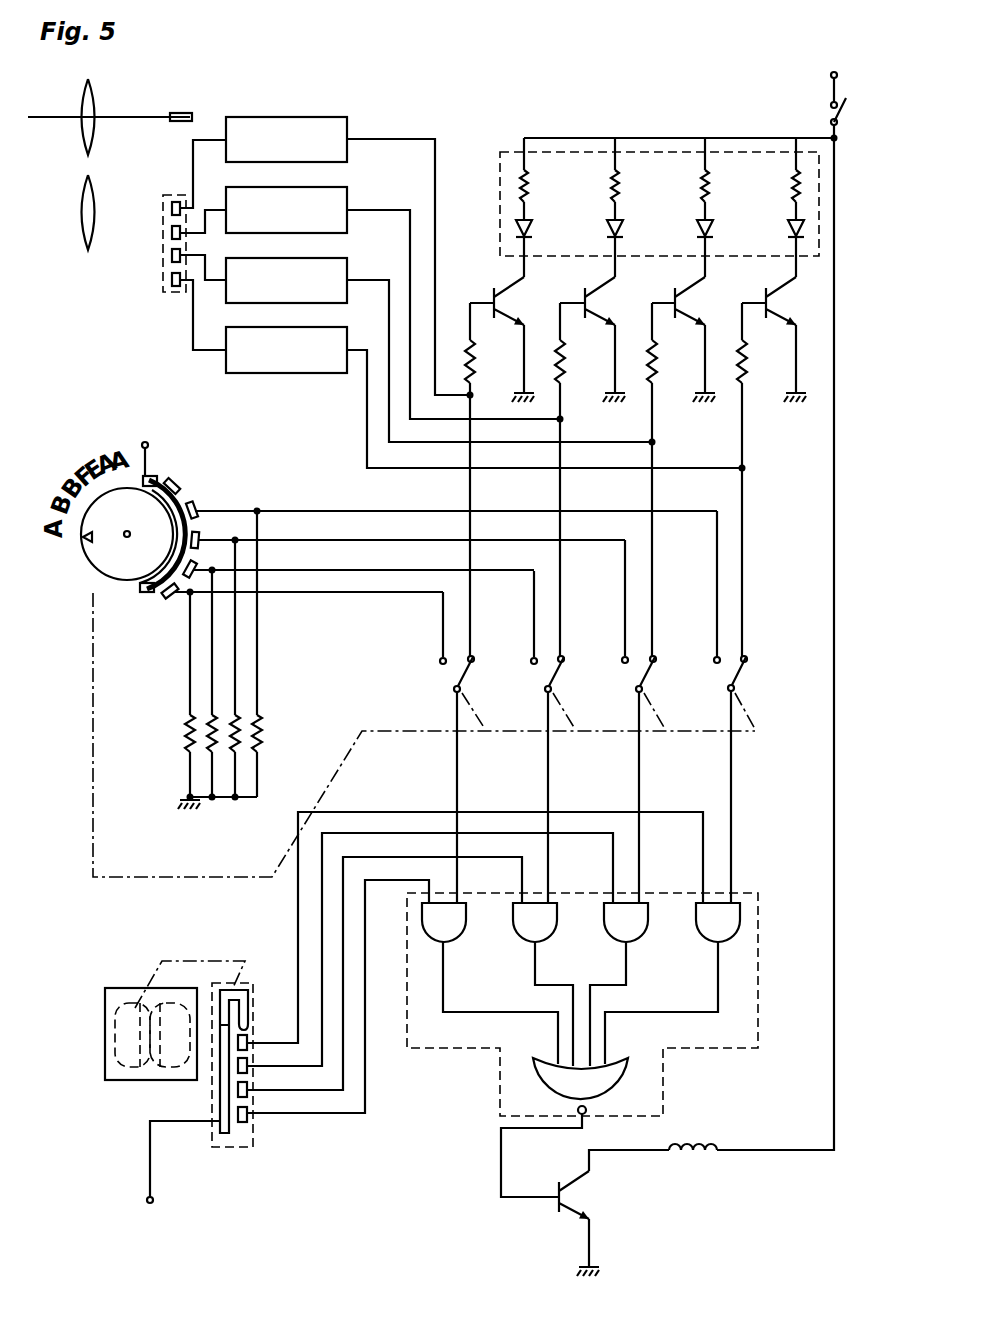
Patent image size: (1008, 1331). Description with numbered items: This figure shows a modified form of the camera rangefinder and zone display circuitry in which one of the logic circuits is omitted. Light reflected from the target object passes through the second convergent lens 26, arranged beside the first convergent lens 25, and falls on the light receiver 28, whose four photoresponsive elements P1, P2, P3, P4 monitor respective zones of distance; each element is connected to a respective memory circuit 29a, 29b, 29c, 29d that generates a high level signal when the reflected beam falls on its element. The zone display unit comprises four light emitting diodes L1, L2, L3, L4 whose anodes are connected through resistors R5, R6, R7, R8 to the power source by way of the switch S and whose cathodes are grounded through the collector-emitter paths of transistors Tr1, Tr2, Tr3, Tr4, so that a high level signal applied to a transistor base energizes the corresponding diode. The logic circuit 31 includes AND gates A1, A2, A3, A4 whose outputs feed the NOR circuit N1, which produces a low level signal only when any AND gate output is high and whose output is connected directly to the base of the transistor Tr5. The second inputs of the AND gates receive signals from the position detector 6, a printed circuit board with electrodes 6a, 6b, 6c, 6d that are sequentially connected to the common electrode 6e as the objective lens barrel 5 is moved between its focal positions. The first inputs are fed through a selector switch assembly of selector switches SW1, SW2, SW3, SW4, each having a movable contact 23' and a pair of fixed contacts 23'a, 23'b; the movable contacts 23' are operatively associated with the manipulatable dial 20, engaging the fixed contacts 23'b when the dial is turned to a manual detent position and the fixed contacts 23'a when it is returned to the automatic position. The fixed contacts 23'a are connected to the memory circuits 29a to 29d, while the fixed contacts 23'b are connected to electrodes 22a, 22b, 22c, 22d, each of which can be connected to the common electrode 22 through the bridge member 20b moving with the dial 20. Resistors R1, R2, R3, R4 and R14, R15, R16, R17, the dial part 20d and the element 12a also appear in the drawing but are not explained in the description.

The first convergent lens 25 is at (95, 97).
The second convergent lens 26 is at (80, 222).
The light receiver 28 is at (175, 292).
The photoresponsive element P1 is at (172, 280).
The photoresponsive element P2 is at (172, 254).
The photoresponsive element P3 is at (172, 230).
The photoresponsive element P4 is at (172, 205).
The memory circuit 29a is at (300, 373).
The memory circuit 29b is at (347, 259).
The memory circuit 29c is at (347, 188).
The memory circuit 29d is at (300, 115).
The switch S is at (830, 112).
The resistor R1 is at (744, 356).
The resistor R2 is at (654, 356).
The resistor R3 is at (562, 356).
The resistor R4 is at (472, 356).
The resistor R5 is at (792, 190).
The resistor R6 is at (701, 190).
The resistor R7 is at (611, 190).
The resistor R8 is at (520, 190).
The light emitting diode L1 is at (789, 228).
The light emitting diode L2 is at (698, 228).
The light emitting diode L3 is at (608, 228).
The light emitting diode L4 is at (517, 228).
The transistor Tr1 is at (796, 339).
The transistor Tr2 is at (704, 339).
The transistor Tr3 is at (614, 339).
The transistor Tr4 is at (524, 339).
The transistor Tr5 is at (614, 1213).
The manipulatable dial 20 is at (100, 562).
The bridge member 20b is at (175, 478).
The dial axis 20d is at (124, 537).
The common electrode 22 is at (148, 588).
The electrode 22a is at (196, 505).
The electrode 22b is at (200, 535).
The electrode 22c is at (186, 576).
The electrode 22d is at (165, 598).
The resistor R14 is at (187, 735).
The resistor R15 is at (210, 745).
The resistor R16 is at (237, 742).
The resistor R17 is at (259, 740).
The selector switch SW1 is at (440, 680).
The selector switch SW2 is at (523, 737).
The selector switch SW3 is at (615, 721).
The selector switch SW4 is at (707, 707).
The movable contact 23' is at (592, 680).
The fixed contact 23'a is at (647, 630).
The fixed contact 23'b is at (600, 628).
The AND gate A1 is at (740, 922).
The AND gate A2 is at (647, 922).
The AND gate A3 is at (556, 922).
The AND gate A4 is at (465, 922).
The NOR circuit N1 is at (605, 1092).
The logic circuit 31 is at (728, 1049).
The release magnet coil 12a is at (693, 1156).
The objective lens barrel 5 is at (127, 988).
The position detector 6 is at (231, 1148).
The electrode 6a is at (249, 1040).
The electrode 6b is at (250, 1068).
The electrode 6c is at (250, 1092).
The electrode 6d is at (250, 1115).
The common electrode 6e is at (222, 1135).